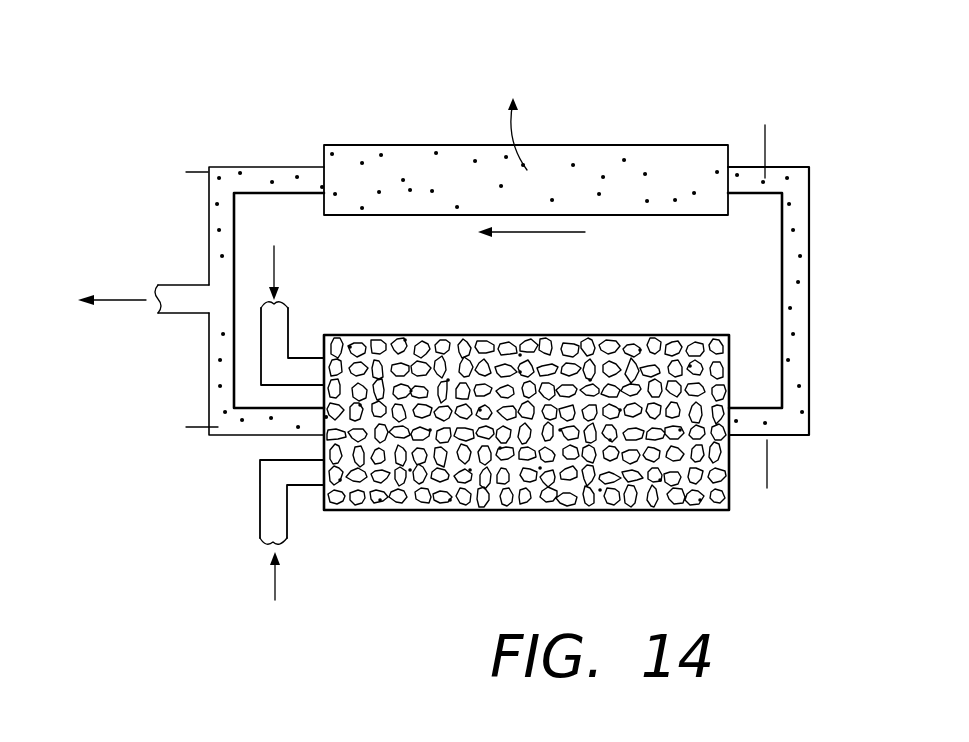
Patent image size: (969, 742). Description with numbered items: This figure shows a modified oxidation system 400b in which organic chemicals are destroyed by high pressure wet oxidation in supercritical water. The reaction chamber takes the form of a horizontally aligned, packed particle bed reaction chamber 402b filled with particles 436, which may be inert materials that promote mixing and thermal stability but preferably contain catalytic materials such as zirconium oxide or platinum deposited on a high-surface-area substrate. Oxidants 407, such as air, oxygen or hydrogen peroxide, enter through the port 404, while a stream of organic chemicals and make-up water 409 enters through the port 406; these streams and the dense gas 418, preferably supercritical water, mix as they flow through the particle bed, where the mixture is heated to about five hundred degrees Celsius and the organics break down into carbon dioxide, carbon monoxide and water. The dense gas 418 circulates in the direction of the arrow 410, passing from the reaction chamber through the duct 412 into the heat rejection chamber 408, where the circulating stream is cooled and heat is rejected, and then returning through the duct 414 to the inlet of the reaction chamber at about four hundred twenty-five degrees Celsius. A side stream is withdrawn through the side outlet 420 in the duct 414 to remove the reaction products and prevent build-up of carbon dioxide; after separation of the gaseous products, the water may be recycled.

The modified fluid flow system 400b is at (445, 357).
The packed particle bed reaction chamber 402b is at (526, 405).
The oxidant port 404 is at (289, 325).
The organics and make-up water port 406 is at (260, 500).
The oxidants 407 is at (277, 262).
The heat rejection chamber 408 is at (583, 145).
The stream of organic chemicals and make-up water 409 is at (276, 590).
The flow direction arrow 410 is at (515, 234).
The duct 412 is at (810, 245).
The duct 414 is at (209, 268).
The dense gas 418 is at (798, 325).
The side outlet port 420 is at (195, 316).
The particles 436 is at (437, 343).